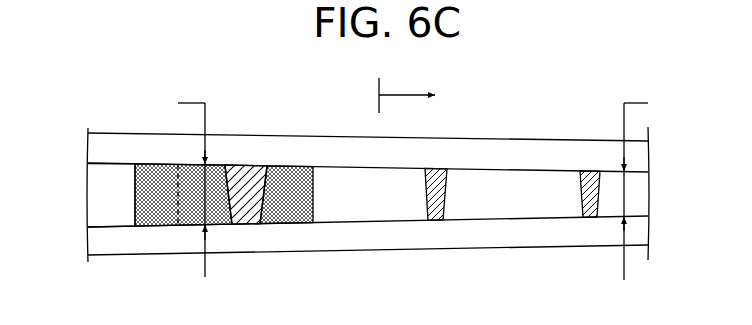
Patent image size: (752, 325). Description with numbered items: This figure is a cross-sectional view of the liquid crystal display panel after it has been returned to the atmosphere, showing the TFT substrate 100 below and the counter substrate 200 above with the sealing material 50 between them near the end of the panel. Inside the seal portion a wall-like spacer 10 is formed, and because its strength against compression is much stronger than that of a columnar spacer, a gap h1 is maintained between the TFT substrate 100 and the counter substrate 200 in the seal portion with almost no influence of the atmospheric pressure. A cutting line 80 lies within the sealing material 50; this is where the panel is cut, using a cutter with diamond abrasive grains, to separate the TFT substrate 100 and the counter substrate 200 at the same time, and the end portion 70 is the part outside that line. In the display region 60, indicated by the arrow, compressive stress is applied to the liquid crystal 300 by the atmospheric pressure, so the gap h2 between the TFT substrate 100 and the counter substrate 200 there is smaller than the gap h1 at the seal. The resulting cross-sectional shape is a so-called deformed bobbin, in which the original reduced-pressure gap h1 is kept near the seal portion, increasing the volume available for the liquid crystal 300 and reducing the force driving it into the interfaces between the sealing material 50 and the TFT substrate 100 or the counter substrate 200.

The wall-like spacer 10 is at (247, 175).
The sealing material 50 is at (157, 178).
The display region 60 is at (407, 93).
The end portion 70 is at (102, 197).
The cutting line 80 is at (178, 203).
The TFT substrate 100 is at (550, 243).
The counter substrate 200 is at (547, 148).
The liquid crystal 300 is at (476, 194).
The gap h1 is at (191, 178).
The gap h2 is at (636, 179).